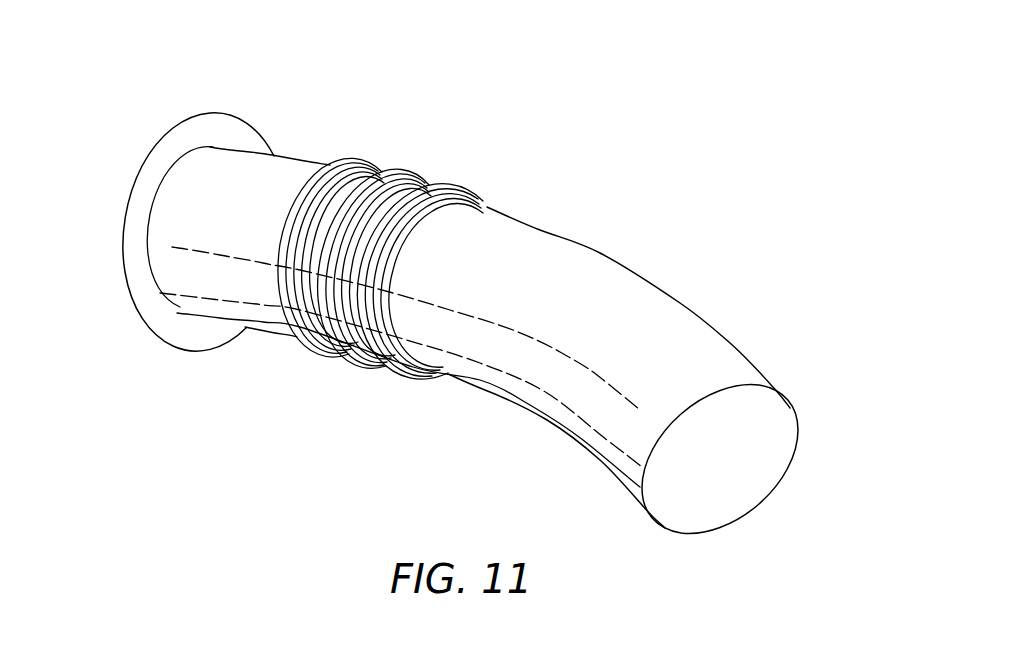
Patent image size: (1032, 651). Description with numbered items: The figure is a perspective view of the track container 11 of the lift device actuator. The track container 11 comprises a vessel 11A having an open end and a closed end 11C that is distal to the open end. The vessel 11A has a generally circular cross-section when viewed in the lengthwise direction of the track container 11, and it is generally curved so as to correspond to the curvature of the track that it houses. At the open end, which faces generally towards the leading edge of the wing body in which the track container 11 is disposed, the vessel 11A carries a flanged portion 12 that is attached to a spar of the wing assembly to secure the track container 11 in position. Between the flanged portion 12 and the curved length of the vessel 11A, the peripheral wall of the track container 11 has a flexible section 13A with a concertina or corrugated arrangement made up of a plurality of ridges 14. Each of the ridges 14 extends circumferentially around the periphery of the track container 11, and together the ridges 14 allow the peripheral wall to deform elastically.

The track container 11 is at (222, 86).
The vessel 11A is at (590, 245).
The closed end 11C is at (744, 522).
The flanged portion 12 is at (208, 348).
The flexible section 13A is at (377, 158).
The ridges 14 is at (467, 180).